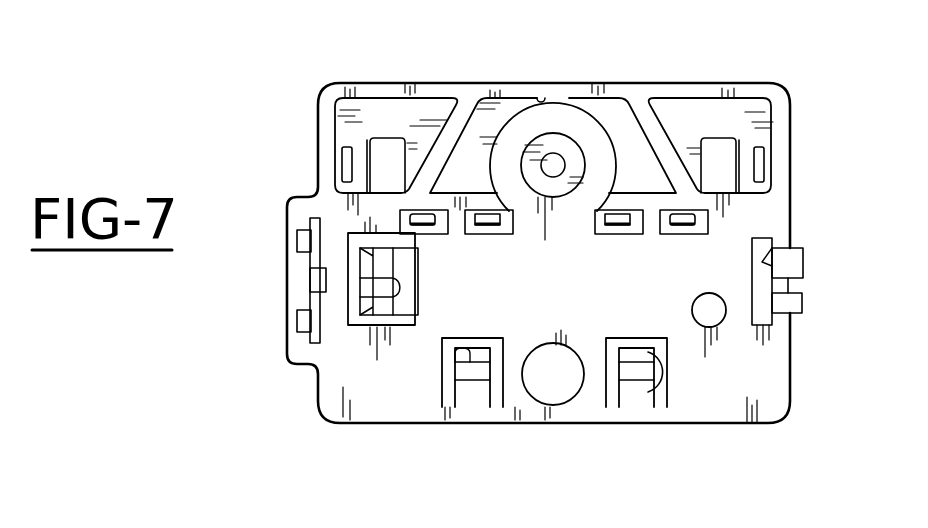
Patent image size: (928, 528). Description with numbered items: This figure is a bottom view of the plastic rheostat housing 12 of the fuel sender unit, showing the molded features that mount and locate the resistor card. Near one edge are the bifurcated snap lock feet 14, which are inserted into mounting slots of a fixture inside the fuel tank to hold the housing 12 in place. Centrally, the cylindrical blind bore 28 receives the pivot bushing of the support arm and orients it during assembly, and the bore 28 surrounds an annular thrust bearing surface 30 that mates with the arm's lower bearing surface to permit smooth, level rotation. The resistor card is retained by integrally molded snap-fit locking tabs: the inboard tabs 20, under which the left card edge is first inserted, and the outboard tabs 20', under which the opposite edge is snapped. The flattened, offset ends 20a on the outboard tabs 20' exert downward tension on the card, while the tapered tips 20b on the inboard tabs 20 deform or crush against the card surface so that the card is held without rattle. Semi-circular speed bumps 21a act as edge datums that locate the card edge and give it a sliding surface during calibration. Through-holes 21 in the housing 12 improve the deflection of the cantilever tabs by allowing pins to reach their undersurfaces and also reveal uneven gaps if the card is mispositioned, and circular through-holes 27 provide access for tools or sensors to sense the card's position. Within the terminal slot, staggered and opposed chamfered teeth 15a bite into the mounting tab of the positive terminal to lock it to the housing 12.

The rheostat housing 12 is at (713, 412).
The bifurcated snap lock feet 14 is at (808, 297).
The chamfered teeth 15a is at (310, 298).
The snap-fit locking tabs 20 is at (648, 140).
The outboard tabs 20' is at (554, 438).
The flattened offset ends 20a is at (460, 348).
The tapered tips 20b is at (683, 232).
The through-holes 21 is at (472, 236).
The speed bumps 21a is at (425, 222).
The circular through-holes 27 is at (558, 385).
The cylindrical blind bore 28 is at (563, 103).
The annular thrust bearing surface 30 is at (530, 127).